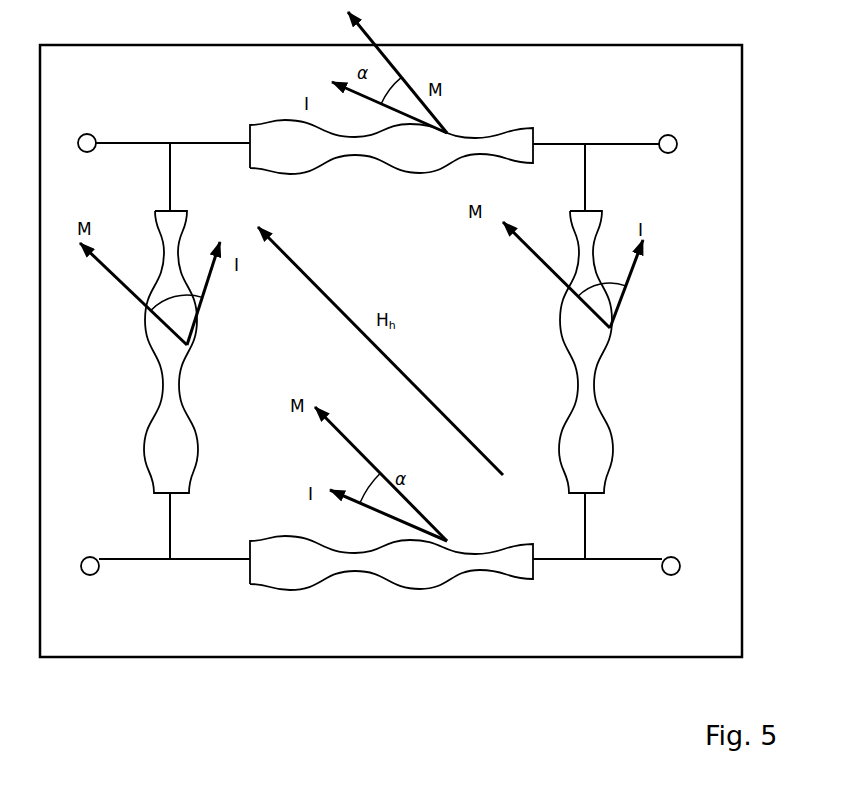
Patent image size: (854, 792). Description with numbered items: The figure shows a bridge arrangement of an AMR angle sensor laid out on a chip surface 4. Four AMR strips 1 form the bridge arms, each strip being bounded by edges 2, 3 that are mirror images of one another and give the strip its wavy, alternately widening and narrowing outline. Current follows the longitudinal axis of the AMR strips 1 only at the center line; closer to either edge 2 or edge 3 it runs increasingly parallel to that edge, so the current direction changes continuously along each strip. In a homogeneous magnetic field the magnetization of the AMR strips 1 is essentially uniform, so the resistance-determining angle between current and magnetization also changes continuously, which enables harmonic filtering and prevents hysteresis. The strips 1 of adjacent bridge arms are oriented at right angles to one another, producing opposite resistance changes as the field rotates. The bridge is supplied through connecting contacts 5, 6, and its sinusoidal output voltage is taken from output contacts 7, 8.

The AMR strip 1 is at (590, 345).
The edge 2 is at (573, 435).
The edge 3 is at (612, 470).
The chip surface 4 is at (733, 258).
The connecting contact 5 is at (96, 134).
The connecting contact 6 is at (680, 555).
The output contact 7 is at (97, 573).
The output contact 8 is at (678, 131).